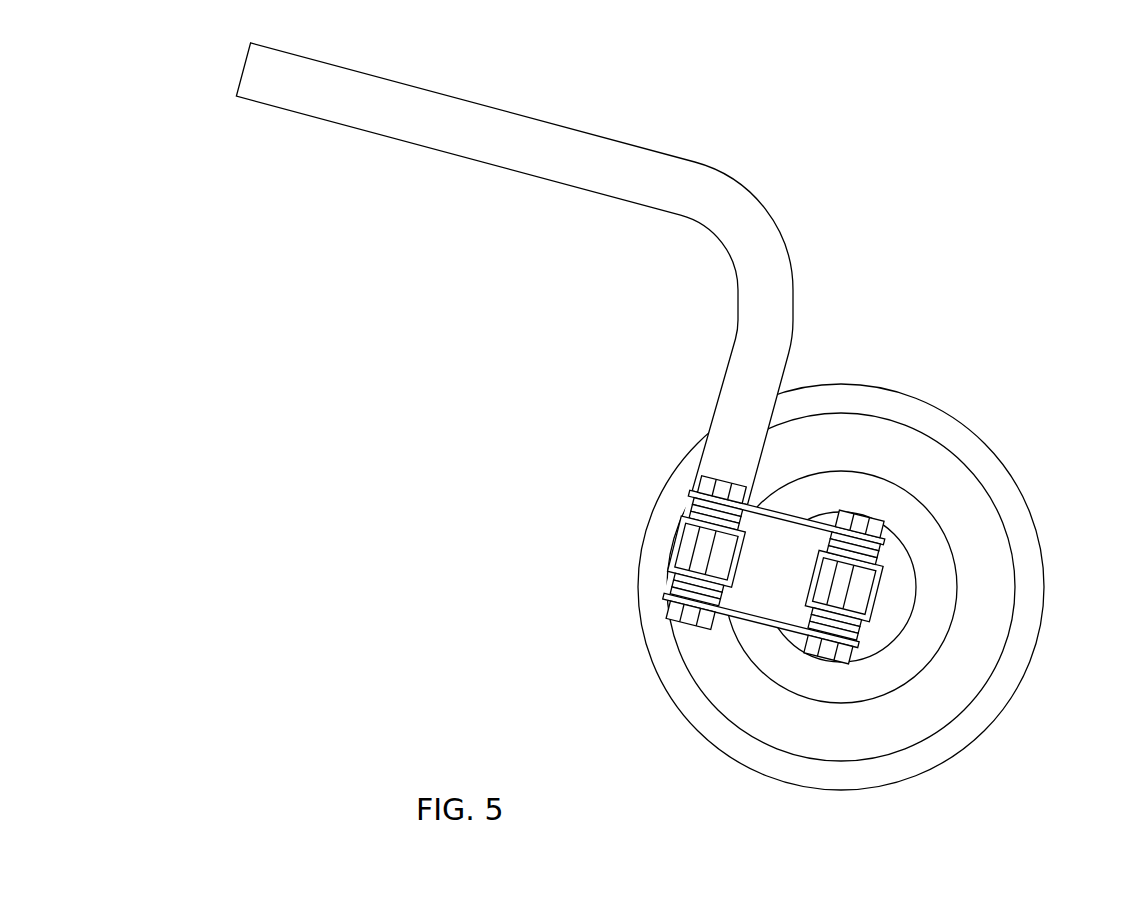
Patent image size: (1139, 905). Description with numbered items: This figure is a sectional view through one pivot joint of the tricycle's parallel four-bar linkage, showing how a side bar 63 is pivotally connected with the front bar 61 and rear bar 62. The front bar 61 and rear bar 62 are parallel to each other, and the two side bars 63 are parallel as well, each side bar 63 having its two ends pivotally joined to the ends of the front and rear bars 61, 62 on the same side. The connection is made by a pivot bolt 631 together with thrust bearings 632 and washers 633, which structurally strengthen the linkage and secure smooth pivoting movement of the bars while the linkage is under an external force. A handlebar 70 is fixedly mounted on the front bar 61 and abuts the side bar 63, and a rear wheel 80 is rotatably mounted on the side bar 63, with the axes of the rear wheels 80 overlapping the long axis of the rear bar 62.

The handlebar 70 is at (603, 163).
The rear wheel 80 is at (938, 428).
The front bar 61 is at (680, 538).
The rear bar 62 is at (845, 593).
The side bar 63 is at (768, 632).
The pivot bolt 631 is at (867, 623).
The thrust bearing 632 is at (875, 555).
The washer 633 is at (875, 550).